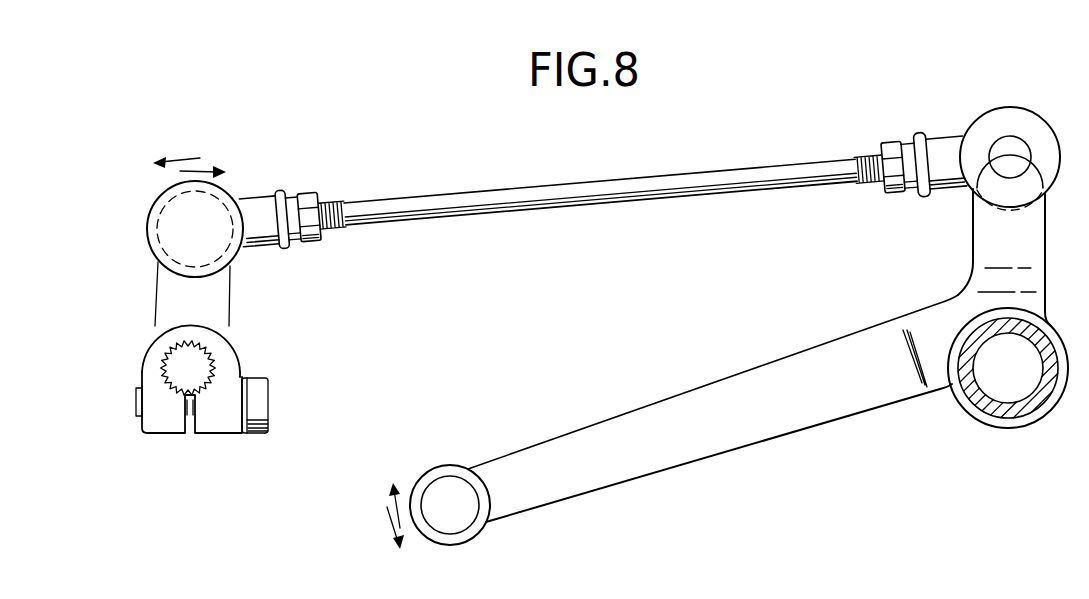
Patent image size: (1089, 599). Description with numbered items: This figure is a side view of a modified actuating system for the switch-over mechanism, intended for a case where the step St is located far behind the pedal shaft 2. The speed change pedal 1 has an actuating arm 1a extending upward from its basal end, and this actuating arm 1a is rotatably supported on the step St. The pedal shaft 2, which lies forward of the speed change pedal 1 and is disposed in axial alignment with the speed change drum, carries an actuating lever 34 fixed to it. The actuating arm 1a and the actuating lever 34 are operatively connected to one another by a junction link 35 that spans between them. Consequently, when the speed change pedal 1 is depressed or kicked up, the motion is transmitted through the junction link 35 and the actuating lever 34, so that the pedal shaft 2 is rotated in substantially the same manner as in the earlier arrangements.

The speed change pedal 1 is at (718, 384).
The actuating arm 1a is at (975, 236).
The pedal shaft 2 is at (215, 360).
The actuating lever 34 is at (220, 300).
The junction link 35 is at (578, 186).
The step St is at (1010, 413).